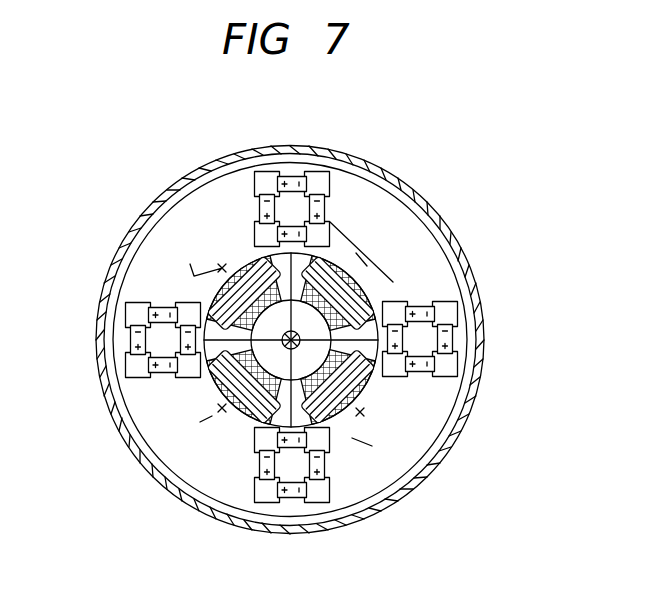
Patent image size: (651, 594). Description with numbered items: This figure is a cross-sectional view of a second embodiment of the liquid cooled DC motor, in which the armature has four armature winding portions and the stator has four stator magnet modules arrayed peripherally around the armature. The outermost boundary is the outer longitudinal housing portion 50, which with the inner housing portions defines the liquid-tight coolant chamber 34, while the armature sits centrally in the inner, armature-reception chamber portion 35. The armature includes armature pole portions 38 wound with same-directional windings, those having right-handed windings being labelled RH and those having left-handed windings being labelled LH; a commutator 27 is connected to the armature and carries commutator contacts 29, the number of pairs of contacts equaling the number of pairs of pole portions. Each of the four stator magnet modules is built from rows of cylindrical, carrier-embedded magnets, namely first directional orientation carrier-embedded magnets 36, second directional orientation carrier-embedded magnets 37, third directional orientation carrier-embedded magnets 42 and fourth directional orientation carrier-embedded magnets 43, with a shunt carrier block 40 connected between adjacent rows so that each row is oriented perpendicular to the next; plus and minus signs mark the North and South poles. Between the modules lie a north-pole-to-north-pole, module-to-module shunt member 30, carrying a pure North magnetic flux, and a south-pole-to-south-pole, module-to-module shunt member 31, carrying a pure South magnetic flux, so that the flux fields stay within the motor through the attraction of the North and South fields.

The commutator 27 is at (263, 253).
The commutator contacts 29 is at (175, 274).
The north-pole-to-north-pole, module-to-module shunt member 30 is at (263, 260).
The south-pole-to-south-pole, module-to-module shunt member 31 is at (362, 298).
The liquid-tight coolant chamber 34 is at (350, 251).
The inner, armature-reception chamber portion 35 is at (363, 409).
The first directional orientation carrier-embedded magnets 36 is at (389, 220).
The second directional orientation carrier-embedded magnets 37 is at (272, 225).
The armature pole portions 38 is at (343, 382).
The shunt carrier block 40 is at (266, 174).
The third directional orientation carrier-embedded magnets 42 is at (297, 178).
The fourth directional orientation carrier-embedded magnets 43 is at (405, 302).
The outer longitudinal housing portion 50 is at (332, 212).